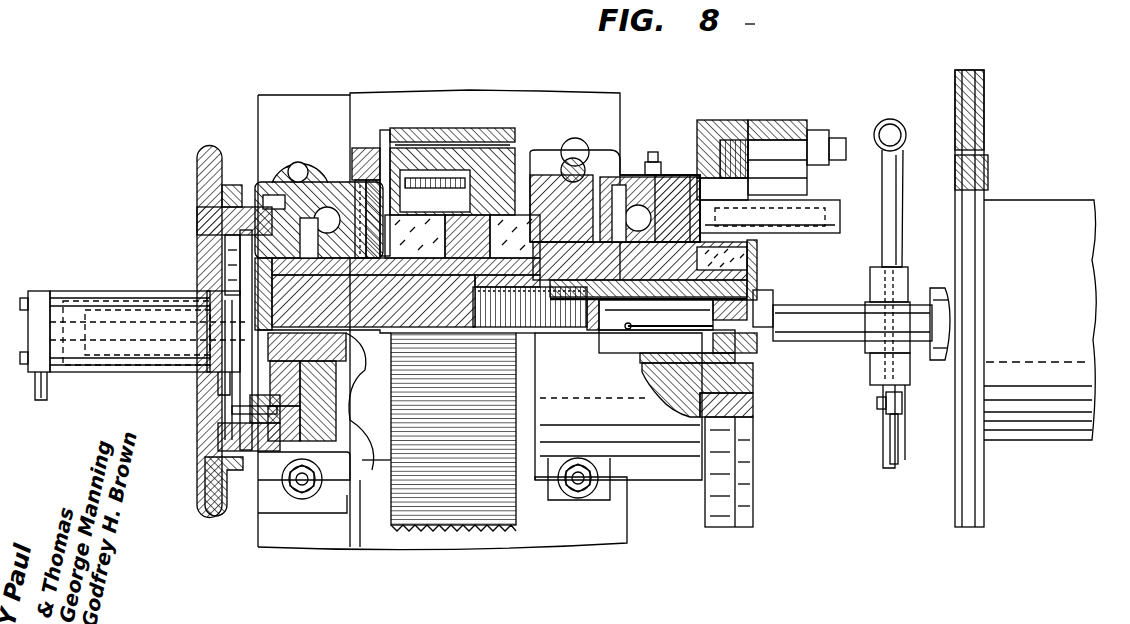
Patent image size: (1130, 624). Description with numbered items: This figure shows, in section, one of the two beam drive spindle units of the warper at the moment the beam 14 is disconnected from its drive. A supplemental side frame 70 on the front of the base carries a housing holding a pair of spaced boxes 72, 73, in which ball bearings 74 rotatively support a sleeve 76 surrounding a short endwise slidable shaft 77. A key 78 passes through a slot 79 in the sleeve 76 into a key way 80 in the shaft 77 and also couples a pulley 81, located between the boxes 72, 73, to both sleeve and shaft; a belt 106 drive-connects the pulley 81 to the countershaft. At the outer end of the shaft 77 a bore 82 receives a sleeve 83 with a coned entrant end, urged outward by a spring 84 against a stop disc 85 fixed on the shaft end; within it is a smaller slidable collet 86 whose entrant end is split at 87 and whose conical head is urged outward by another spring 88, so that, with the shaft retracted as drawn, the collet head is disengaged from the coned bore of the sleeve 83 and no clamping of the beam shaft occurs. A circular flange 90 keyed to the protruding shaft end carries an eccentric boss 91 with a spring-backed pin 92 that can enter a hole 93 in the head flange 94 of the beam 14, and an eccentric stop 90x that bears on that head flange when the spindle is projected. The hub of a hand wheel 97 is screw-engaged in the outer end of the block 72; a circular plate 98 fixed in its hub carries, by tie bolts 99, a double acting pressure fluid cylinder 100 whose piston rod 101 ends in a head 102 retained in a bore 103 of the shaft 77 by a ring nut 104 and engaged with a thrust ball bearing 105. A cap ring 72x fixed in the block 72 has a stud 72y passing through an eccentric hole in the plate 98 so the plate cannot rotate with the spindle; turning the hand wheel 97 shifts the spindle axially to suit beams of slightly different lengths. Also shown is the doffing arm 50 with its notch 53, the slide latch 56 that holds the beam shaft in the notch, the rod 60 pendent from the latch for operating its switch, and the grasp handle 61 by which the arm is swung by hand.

The beam 14 is at (1074, 452).
The arm 50 is at (922, 462).
The notch 53 is at (905, 300).
The slide latch 56 is at (888, 323).
The rod 60 is at (890, 434).
The grasp handle 61 is at (890, 122).
The supplemental side frame 70 is at (297, 108).
The box 72 is at (370, 468).
The cap ring 72x is at (245, 430).
The stud 72y is at (232, 410).
The box 73 is at (664, 460).
The ball bearing 74 is at (325, 216).
The sleeve 76 is at (588, 240).
The shaft 77 is at (662, 262).
The key 78 is at (515, 240).
The slot 79 is at (555, 240).
The key way 80 is at (362, 180).
The pulley 81 is at (440, 165).
The bore 82 is at (662, 378).
The sleeve 83 is at (646, 368).
The spring 84 is at (552, 327).
The stop disc 85 is at (747, 272).
The collet 86 is at (758, 345).
The split 87 is at (645, 330).
The spring 88 is at (598, 325).
The circular flange 90 is at (740, 512).
The stop 90x is at (805, 230).
The boss 91 is at (780, 128).
The pin 92 is at (822, 146).
The hole 93 is at (988, 162).
The head flange 94 is at (986, 102).
The hand wheel 97 is at (204, 150).
The circular plate 98 is at (240, 270).
The tie bolt 99 is at (110, 300).
The double acting pressure fluid cylinder 100 is at (165, 350).
The piston rod 101 is at (146, 318).
The head 102 is at (318, 332).
The bore 103 is at (312, 368).
The ring nut 104 is at (336, 378).
The thrust ball bearing 105 is at (370, 448).
The belt 106 is at (412, 130).